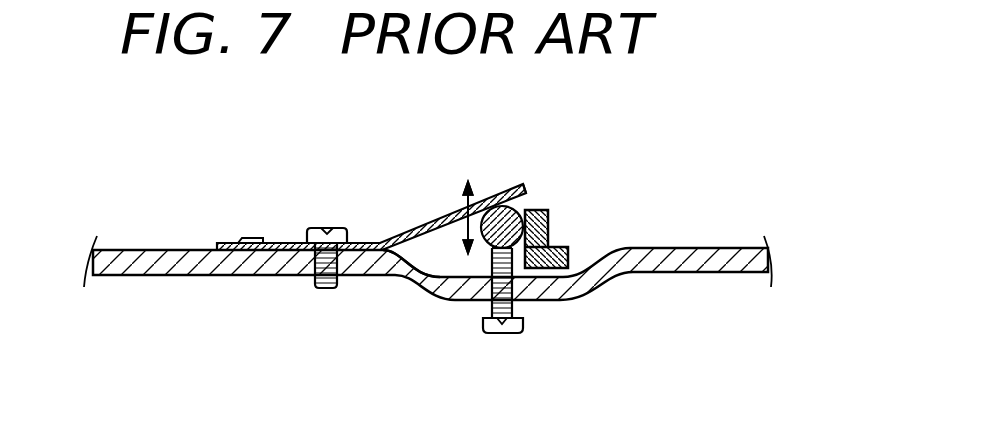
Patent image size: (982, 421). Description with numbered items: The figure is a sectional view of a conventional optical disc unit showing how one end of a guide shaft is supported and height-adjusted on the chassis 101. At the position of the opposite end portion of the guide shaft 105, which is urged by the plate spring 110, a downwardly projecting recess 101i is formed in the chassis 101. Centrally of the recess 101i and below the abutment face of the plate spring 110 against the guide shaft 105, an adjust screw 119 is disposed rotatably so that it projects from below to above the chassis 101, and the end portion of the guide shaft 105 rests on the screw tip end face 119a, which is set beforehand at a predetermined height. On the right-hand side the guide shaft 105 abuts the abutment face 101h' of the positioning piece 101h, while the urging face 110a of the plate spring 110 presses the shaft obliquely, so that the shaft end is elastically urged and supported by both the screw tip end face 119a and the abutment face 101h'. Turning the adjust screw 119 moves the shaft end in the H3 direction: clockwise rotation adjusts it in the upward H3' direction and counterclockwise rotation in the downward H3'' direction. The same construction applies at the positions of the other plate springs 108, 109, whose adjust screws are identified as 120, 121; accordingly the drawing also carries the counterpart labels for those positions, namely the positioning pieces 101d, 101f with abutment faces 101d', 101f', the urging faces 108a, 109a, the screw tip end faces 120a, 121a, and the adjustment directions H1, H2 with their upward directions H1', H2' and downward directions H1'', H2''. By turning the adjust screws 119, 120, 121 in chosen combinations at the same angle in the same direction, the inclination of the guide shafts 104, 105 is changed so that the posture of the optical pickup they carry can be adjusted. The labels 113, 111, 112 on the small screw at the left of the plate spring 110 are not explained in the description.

The chassis 101 is at (748, 274).
The recess 101i is at (395, 272).
The positioning piece 101h is at (645, 238).
The panel bracket 101d is at (645, 238).
The panel bracket 101f is at (645, 238).
The abutment face 101h' is at (615, 293).
The panel bracket hole 101d' is at (615, 293).
The panel bracket hole 101f' is at (615, 293).
The plate spring 110 is at (371, 201).
The plate spring 108 is at (371, 201).
The plate spring 109 is at (414, 230).
The urging face 110a is at (607, 172).
The end of mounting plate 108a is at (607, 172).
The end of mounting plate 109a is at (526, 198).
The fastening screw 113 is at (264, 202).
The fastening screw 111 is at (264, 202).
The fastening screw 112 is at (310, 228).
The guide shaft 105 is at (600, 212).
The guide shaft 104 is at (519, 208).
The adjust screw 119 is at (625, 319).
The adjust screw 120 is at (625, 319).
The adjust screw 121 is at (513, 331).
The screw tip end face 119a is at (476, 317).
The adjusting screw tip 120a is at (476, 317).
The adjusting screw tip 121a is at (492, 248).
The adjustment direction H3 is at (430, 166).
The height adjustment range H1 is at (430, 166).
The height adjustment range H2 is at (430, 166).
The upward direction H3' is at (520, 159).
The upward direction H1' is at (520, 159).
The upward direction H2' is at (520, 159).
The downward direction H3'' is at (386, 330).
The downward direction H1'' is at (386, 330).
The downward direction H2'' is at (386, 330).